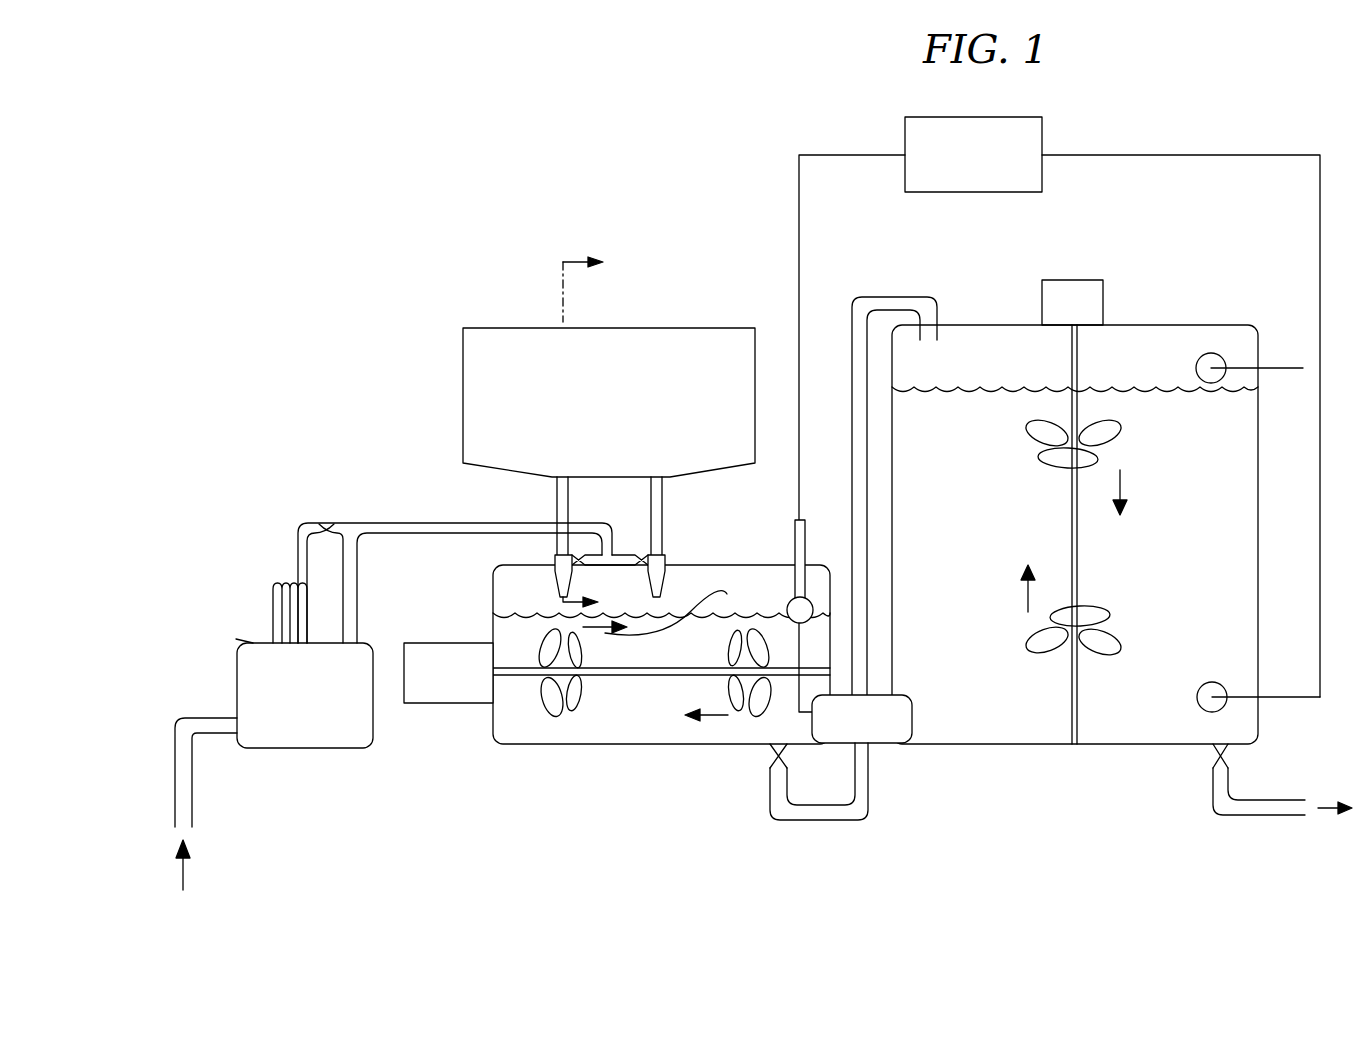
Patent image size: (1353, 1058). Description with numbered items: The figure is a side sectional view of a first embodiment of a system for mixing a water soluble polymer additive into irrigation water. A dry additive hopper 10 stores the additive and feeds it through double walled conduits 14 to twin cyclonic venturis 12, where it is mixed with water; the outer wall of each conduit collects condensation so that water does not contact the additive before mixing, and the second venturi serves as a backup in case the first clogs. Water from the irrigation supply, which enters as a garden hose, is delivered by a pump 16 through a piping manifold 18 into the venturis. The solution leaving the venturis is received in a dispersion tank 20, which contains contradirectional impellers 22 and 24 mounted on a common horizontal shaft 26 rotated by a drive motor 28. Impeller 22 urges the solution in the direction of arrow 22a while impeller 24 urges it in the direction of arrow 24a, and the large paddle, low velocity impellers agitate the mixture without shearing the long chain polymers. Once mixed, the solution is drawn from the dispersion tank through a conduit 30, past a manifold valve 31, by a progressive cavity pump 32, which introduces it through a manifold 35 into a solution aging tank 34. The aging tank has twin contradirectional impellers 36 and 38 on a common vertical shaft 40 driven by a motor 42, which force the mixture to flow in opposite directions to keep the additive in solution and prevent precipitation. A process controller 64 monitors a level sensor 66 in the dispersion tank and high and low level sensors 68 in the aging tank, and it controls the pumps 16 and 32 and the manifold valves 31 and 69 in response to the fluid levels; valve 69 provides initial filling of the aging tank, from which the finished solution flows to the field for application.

The dry additive hopper 10 is at (463, 373).
The cyclonic venturis 12 is at (555, 590).
The double walled conduits 14 is at (557, 492).
The pump 16 is at (283, 748).
The piping manifold 18 is at (400, 520).
The dispersion tank 20 is at (650, 745).
The impeller 22 is at (578, 703).
The arrow 22a is at (700, 720).
The impeller 24 is at (770, 645).
The arrow 24a is at (675, 609).
The horizontal shaft 26 is at (512, 677).
The drive motor 28 is at (438, 703).
The conduit 30 is at (832, 820).
The manifold valve 31 is at (790, 757).
The progressive cavity pump 32 is at (893, 745).
The solution aging tank 34 is at (1000, 745).
The manifold 35 is at (852, 345).
The impeller 36 is at (1112, 640).
The impeller 38 is at (1110, 440).
The vertical shaft 40 is at (1072, 350).
The motor 42 is at (1062, 280).
The process controller 64 is at (935, 192).
The level sensor 66 is at (794, 543).
The high and low level sensors 68 is at (1284, 367).
The manifold valve 69 is at (1232, 752).